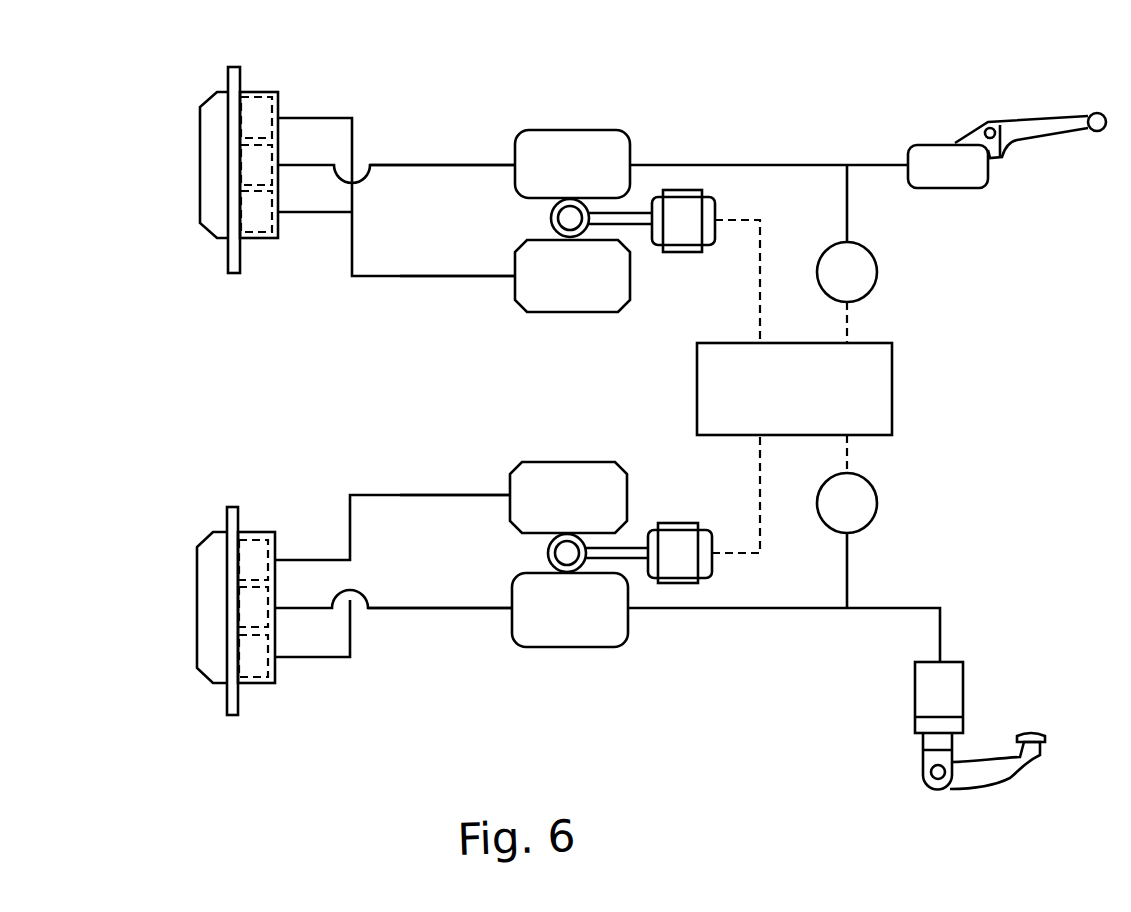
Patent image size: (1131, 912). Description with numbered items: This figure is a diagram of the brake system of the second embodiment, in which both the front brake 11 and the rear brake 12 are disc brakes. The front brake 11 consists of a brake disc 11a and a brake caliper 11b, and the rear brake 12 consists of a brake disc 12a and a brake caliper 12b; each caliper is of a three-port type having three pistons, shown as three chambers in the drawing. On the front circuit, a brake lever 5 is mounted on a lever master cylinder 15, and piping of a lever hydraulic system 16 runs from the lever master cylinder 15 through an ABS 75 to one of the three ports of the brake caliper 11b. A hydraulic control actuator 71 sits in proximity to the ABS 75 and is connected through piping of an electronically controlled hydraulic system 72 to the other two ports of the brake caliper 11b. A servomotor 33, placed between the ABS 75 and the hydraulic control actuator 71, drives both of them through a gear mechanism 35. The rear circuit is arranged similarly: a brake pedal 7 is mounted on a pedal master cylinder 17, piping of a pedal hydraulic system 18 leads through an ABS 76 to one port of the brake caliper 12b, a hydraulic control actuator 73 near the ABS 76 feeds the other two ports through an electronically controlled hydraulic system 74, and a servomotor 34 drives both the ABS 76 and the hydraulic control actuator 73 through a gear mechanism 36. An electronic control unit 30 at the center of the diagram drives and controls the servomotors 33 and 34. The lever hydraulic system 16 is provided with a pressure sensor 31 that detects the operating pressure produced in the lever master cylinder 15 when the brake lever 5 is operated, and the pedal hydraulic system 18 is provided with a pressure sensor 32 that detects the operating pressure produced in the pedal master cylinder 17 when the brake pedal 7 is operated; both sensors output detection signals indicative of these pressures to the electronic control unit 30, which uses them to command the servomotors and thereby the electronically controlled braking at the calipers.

The brake lever 5 is at (1060, 118).
The brake pedal 7 is at (1020, 778).
The front brake 11 is at (229, 172).
The brake disc 11a is at (228, 272).
The brake caliper 11b is at (262, 92).
The rear brake 12 is at (226, 596).
The brake disc 12a is at (225, 700).
The brake caliper 12b is at (255, 532).
The lever master cylinder 15 is at (933, 145).
The lever hydraulic system 16 is at (462, 165).
The pedal master cylinder 17 is at (965, 684).
The pedal hydraulic system 18 is at (437, 608).
The electronic control unit 30 is at (892, 388).
The pressure sensor 31 is at (878, 268).
The pressure sensor 32 is at (878, 503).
The servomotor 33 is at (683, 252).
The servomotor 34 is at (678, 523).
The gear mechanism 35 is at (551, 218).
The gear mechanism 36 is at (548, 553).
The hydraulic control actuator 71 is at (570, 313).
The electronically controlled hydraulic system 72 is at (418, 278).
The hydraulic control actuator 73 is at (570, 462).
The electronically controlled hydraulic system 74 is at (420, 495).
The ABS 75 is at (580, 130).
The ABS 76 is at (570, 647).